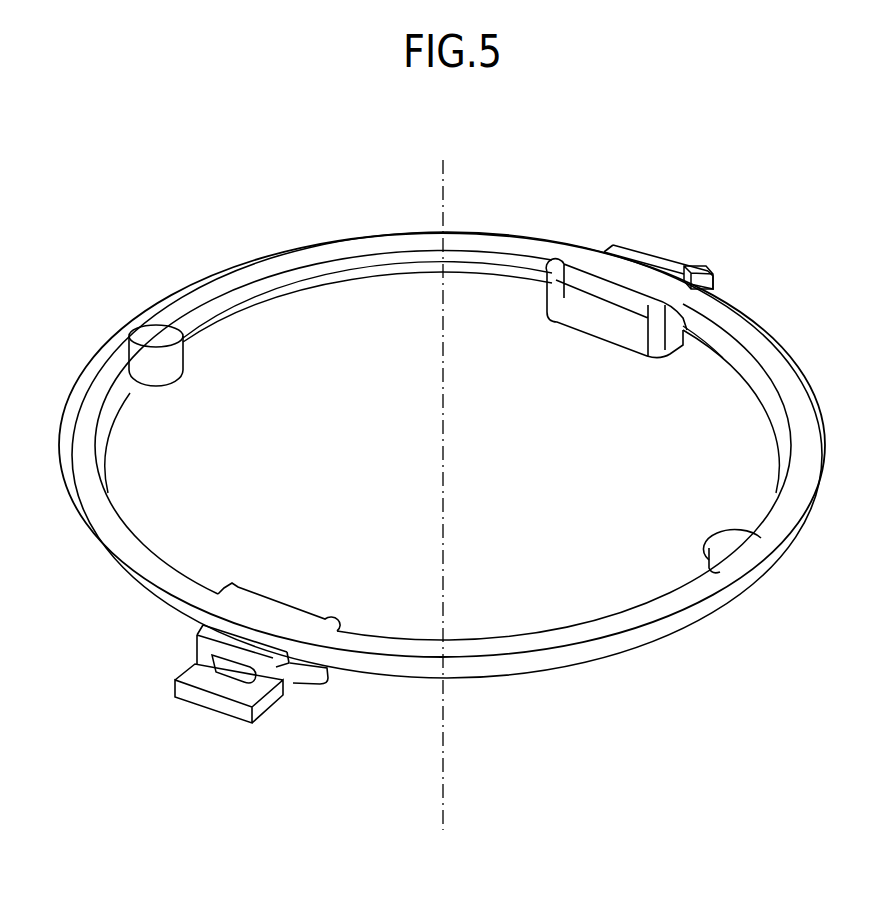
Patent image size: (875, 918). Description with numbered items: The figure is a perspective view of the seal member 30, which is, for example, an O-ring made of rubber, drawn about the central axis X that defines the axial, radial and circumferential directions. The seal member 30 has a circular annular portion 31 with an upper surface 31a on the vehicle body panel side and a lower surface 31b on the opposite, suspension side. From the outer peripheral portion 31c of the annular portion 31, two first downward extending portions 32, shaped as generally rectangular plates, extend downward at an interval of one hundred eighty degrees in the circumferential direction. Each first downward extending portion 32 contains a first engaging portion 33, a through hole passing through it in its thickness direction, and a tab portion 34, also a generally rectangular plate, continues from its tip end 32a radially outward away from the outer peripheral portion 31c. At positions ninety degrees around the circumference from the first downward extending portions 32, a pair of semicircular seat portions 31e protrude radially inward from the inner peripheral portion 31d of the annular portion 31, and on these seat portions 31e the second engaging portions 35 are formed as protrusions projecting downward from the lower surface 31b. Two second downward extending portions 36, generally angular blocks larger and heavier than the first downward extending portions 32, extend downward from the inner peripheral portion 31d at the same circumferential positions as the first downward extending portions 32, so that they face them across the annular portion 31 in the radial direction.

The seal member 30 is at (833, 254).
The annular portion 31 is at (626, 625).
The upper surface 31a is at (522, 648).
The lower surface 31b is at (599, 665).
The outer peripheral portion 31c is at (353, 663).
The inner peripheral portion 31d is at (378, 638).
The seat portion 31e is at (183, 345).
The first downward extending portion 32 is at (613, 248).
The tip end 32a is at (288, 690).
The first engaging portion 33 is at (237, 667).
The tab portion 34 is at (698, 263).
The second engaging portion 35 is at (150, 387).
The second downward extending portion 36 is at (600, 312).
The central axis X is at (440, 198).